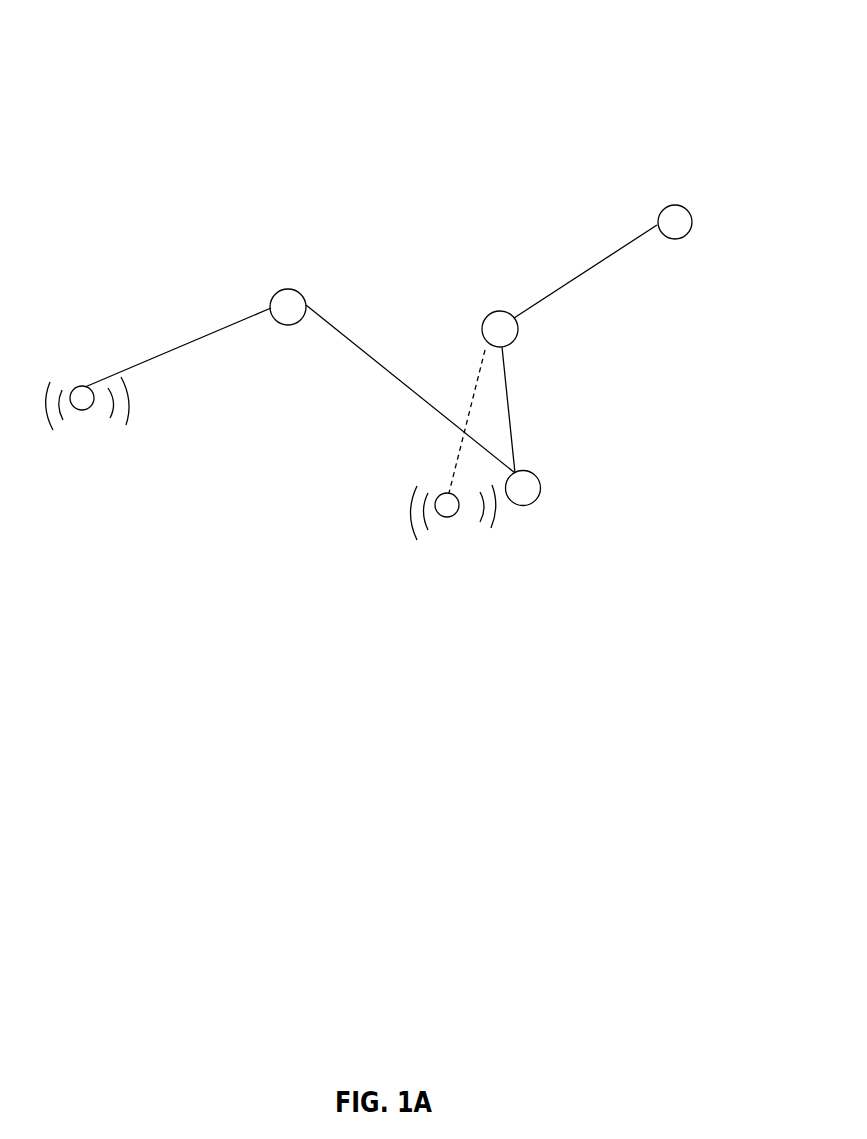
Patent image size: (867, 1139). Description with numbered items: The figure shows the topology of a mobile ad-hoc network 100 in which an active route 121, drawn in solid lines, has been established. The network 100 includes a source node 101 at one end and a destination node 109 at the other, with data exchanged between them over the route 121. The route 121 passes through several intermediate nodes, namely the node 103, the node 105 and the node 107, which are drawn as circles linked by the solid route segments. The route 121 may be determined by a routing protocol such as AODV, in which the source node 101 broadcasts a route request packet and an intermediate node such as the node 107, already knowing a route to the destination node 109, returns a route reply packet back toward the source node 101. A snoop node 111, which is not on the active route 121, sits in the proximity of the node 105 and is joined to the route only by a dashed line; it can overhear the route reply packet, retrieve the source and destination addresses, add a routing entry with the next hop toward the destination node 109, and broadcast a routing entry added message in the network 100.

The mobile ad-hoc network 100 is at (78, 45).
The source node 101 is at (82, 410).
The node 103 is at (288, 325).
The node 105 is at (541, 486).
The node 107 is at (483, 323).
The destination node 109 is at (693, 222).
The snoop node 111 is at (446, 517).
The active route 121 is at (178, 347).